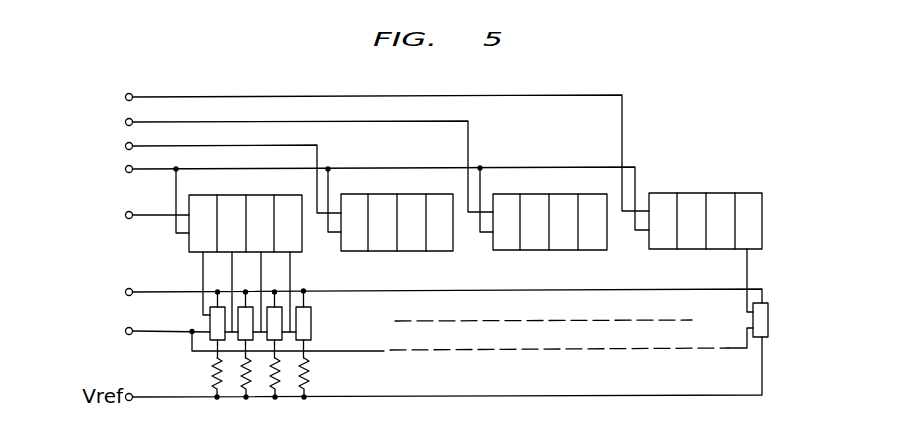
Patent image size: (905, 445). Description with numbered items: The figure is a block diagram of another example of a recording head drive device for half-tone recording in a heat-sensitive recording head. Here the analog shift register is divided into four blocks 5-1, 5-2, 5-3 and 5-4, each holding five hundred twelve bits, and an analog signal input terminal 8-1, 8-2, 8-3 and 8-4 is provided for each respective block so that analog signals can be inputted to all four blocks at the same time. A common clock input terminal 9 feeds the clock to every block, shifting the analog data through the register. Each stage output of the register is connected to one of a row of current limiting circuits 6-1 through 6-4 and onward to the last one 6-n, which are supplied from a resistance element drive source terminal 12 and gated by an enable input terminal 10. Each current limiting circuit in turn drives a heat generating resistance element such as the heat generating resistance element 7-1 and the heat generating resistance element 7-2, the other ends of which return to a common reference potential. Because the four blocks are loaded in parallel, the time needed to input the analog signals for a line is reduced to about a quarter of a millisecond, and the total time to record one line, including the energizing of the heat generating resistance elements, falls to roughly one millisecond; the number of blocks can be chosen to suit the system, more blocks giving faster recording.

The shift register block 5-1 is at (303, 237).
The shift register block 5-2 is at (453, 236).
The shift register block 5-3 is at (607, 235).
The shift register block 5-4 is at (673, 249).
The current limiting circuit 6-1 is at (210, 322).
The current limiting circuit 6-4 is at (311, 318).
The current limiting circuit 6-n is at (768, 310).
The heat generating resistance element 7-1 is at (222, 370).
The heat generating resistance element 7-2 is at (252, 370).
The analog signal input terminal 8-1 is at (139, 215).
The analog signal input terminal 8-2 is at (215, 173).
The analog signal input terminal 8-3 is at (291, 161).
The analog signal input terminal 8-4 is at (369, 148).
The clock input terminal 9 is at (379, 195).
The enable input terminal 10 is at (425, 335).
The resistance element drive source terminal 12 is at (430, 292).